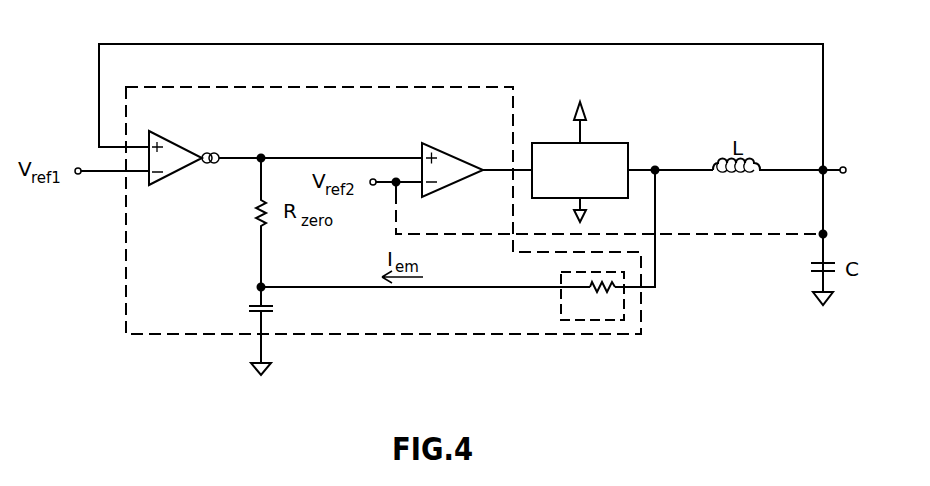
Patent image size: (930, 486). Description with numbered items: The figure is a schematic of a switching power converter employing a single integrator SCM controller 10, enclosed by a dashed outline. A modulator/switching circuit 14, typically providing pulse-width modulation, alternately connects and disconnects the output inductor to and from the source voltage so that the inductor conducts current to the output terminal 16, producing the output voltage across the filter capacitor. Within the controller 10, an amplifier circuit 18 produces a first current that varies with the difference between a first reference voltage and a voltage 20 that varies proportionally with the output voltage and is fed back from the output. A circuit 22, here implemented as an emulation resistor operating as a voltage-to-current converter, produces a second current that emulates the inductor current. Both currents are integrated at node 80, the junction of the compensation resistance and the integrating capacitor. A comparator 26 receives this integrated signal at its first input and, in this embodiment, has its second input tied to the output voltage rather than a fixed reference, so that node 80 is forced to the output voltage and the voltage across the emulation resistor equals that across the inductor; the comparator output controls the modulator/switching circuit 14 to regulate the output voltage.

The voltage 20 is at (97, 77).
The single integrator SCM controller 10 is at (305, 87).
The amplifier circuit 18 is at (184, 175).
The comparator 26 is at (456, 181).
The modulator/switching circuit 14 is at (603, 143).
The output terminal 16 is at (843, 166).
The node 80 is at (258, 285).
The circuit 22 is at (573, 273).